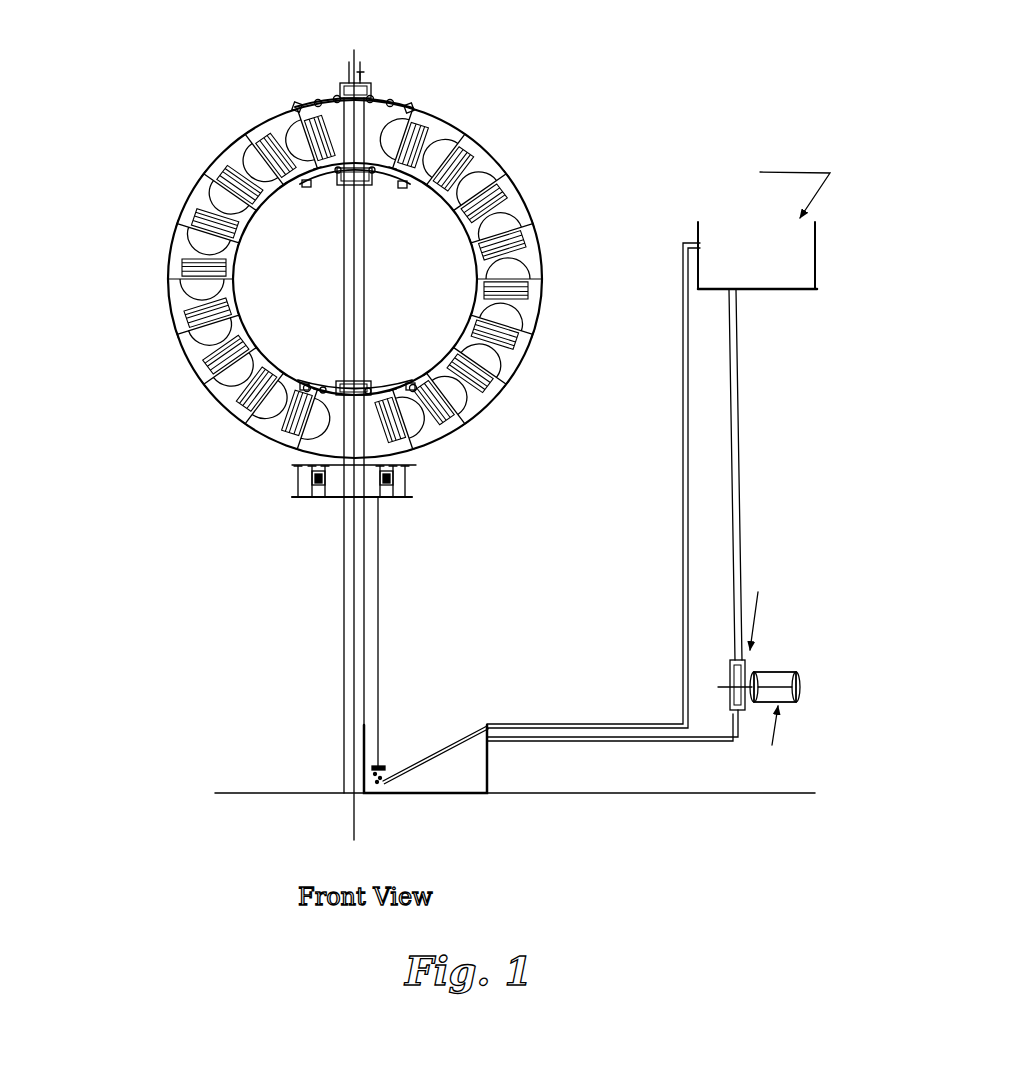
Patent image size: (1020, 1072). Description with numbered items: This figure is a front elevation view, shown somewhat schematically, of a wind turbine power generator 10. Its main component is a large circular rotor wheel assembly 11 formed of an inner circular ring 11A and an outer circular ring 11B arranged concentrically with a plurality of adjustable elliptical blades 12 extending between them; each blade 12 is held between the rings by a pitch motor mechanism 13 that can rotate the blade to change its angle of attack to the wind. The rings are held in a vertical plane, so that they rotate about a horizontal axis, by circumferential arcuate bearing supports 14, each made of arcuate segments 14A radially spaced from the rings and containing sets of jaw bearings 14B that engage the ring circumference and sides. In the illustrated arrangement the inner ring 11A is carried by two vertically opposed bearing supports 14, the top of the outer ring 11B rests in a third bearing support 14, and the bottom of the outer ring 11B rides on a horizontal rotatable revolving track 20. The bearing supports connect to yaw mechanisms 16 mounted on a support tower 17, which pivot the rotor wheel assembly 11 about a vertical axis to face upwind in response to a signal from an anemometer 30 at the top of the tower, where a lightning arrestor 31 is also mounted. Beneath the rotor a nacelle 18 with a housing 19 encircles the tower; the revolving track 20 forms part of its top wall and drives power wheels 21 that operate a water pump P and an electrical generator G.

The wind turbine power generator 10 is at (553, 64).
The circular rotor wheel assembly 11 is at (556, 352).
The inner circular ring 11A is at (237, 340).
The outer circular ring 11B is at (167, 308).
The adjustable elliptical blade 12 is at (200, 192).
The pitch motor mechanism 13 is at (173, 232).
The circumferential arcuate bearing support 14 is at (303, 106).
The arcuate segment 14A is at (400, 102).
The jaw bearings 14B is at (422, 110).
The yaw mechanism 16 is at (380, 190).
The support tower 17 is at (340, 680).
The nacelle 18 is at (418, 482).
The housing 19 is at (373, 490).
The horizontal rotatable revolving track 20 is at (420, 467).
The power wheel 21 is at (405, 512).
The anemometer 30 is at (368, 75).
The lightning arrestor 31 is at (343, 73).
The electrical generator G is at (333, 481).
The water pump P is at (520, 770).